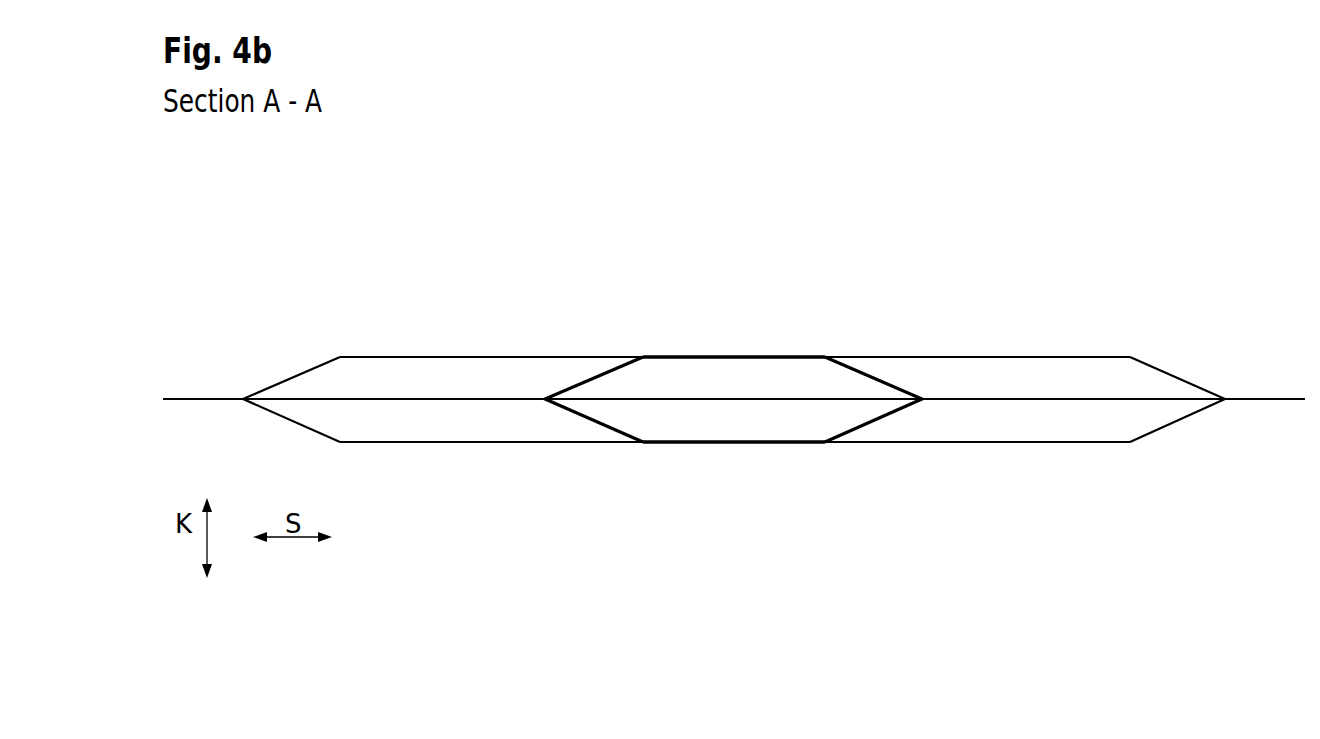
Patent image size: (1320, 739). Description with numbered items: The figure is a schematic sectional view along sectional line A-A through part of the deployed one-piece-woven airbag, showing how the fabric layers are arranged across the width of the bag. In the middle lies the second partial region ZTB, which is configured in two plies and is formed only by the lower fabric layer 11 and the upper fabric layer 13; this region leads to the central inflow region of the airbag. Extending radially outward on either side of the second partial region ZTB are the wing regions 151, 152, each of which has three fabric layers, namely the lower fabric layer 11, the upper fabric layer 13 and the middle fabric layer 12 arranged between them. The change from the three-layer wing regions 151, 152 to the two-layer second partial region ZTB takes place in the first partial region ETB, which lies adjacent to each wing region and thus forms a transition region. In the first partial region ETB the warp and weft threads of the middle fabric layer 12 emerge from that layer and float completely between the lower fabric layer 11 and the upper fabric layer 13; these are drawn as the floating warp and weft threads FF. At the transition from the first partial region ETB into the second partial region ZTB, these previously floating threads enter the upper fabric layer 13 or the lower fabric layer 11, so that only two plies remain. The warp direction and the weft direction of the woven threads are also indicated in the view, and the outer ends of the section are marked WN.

The lower fabric layer 11 is at (480, 441).
The middle fabric layer 12 is at (415, 398).
The upper fabric layer 13 is at (383, 357).
The wing region 151 is at (453, 486).
The wing region 152 is at (935, 484).
The second partial region ZTB is at (707, 456).
The first partial region ETB is at (640, 353).
The floating warp and weft threads FF is at (597, 377).
The material neutral WN is at (212, 397).